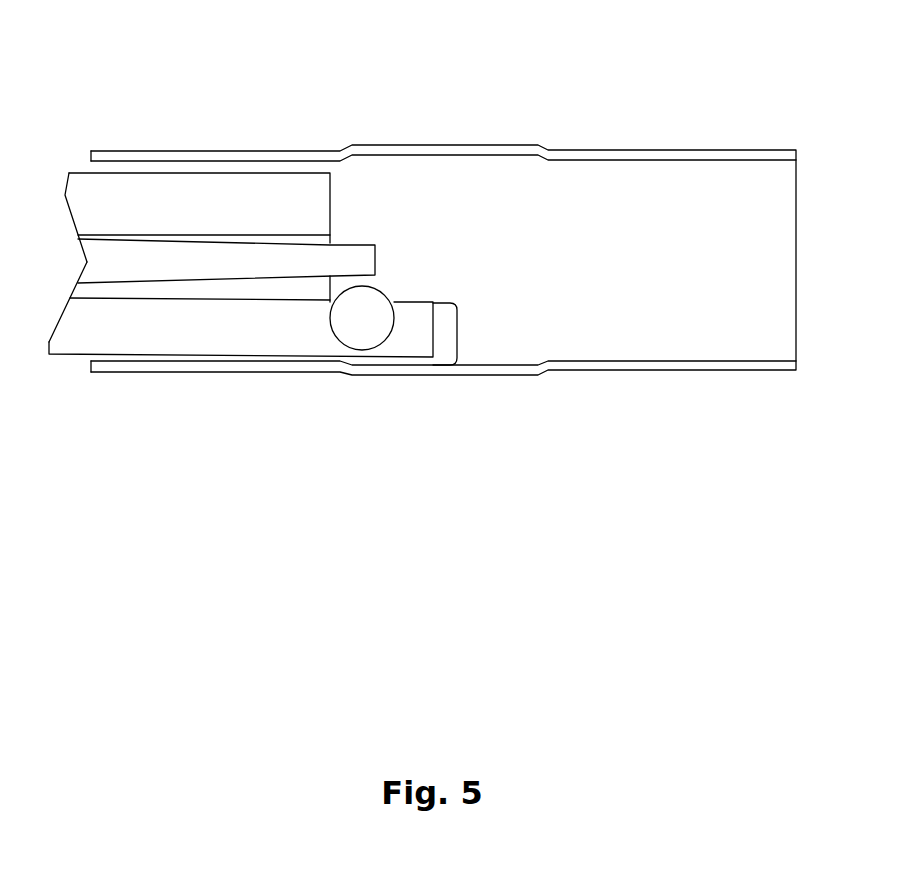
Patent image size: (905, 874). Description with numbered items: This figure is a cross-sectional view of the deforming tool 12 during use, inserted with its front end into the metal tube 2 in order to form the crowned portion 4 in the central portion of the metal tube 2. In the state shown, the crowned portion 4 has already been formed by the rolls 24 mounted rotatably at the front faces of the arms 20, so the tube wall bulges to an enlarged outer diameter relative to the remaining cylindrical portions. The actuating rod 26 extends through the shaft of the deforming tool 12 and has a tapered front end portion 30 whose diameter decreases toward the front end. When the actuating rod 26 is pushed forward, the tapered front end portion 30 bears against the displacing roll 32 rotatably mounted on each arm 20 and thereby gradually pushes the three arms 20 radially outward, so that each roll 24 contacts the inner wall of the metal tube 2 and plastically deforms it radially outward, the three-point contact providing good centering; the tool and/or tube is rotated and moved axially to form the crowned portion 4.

The metal tube 2 is at (705, 153).
The crowned portion 4 is at (443, 143).
The deforming tool 12 is at (82, 167).
The arms 20 is at (203, 328).
The roll 24 is at (447, 357).
The actuating rod 26 is at (127, 264).
The front end portion 30 is at (268, 263).
The displacing roll 32 is at (363, 335).